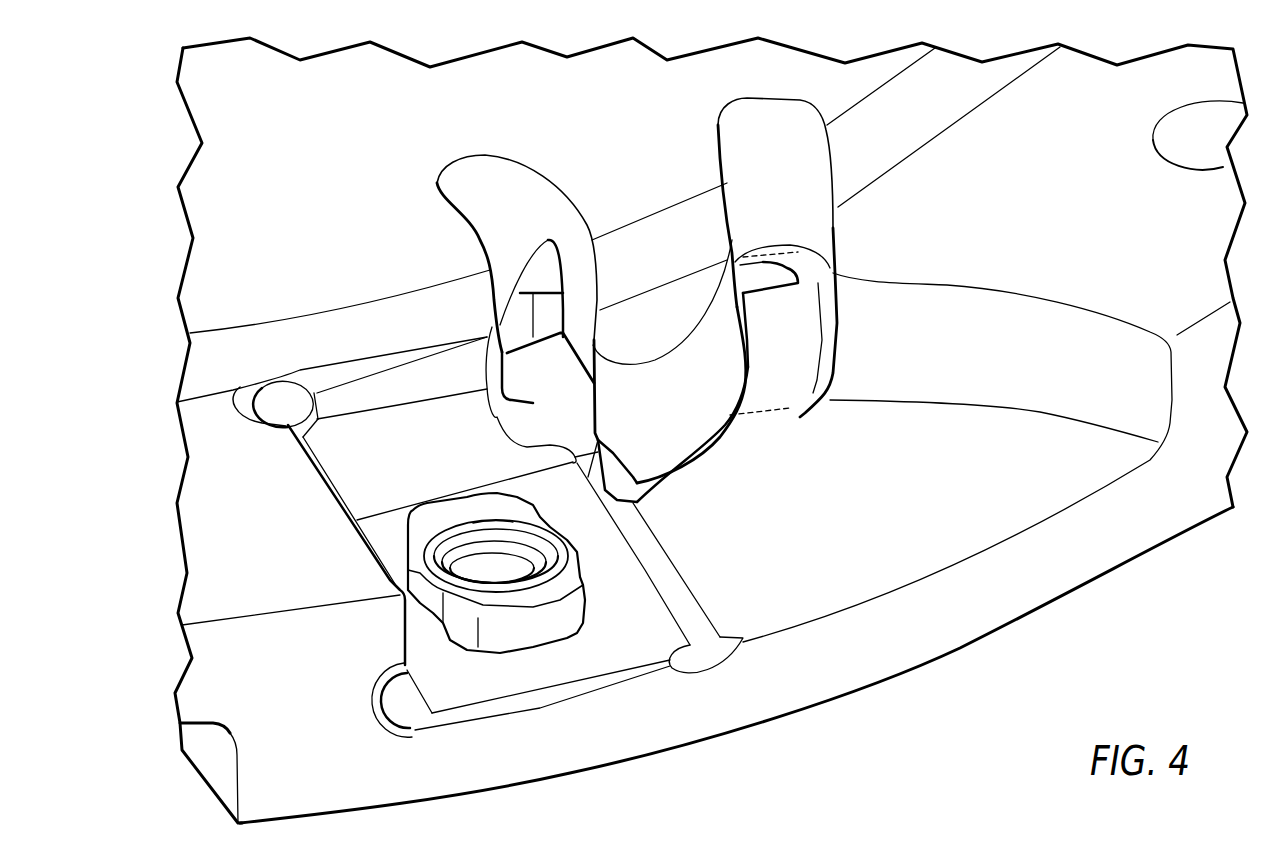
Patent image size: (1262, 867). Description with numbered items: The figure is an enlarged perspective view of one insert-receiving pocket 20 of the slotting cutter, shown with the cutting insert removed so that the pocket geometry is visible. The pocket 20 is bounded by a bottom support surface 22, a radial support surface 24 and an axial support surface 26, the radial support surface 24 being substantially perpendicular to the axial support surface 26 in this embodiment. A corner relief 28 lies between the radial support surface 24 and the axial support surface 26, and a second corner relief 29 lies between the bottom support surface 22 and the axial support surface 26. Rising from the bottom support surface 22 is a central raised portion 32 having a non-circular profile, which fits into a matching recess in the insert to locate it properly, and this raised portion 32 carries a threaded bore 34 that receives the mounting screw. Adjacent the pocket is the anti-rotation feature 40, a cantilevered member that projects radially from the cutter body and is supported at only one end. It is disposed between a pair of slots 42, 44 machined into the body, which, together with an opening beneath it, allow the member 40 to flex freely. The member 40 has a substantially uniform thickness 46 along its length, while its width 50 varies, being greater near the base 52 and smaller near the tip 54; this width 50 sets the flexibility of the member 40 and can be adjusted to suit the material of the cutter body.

The insert-receiving pocket 20 is at (605, 648).
The bottom support surface 22 is at (612, 642).
The radial support surface 24 is at (366, 397).
The axial support surface 26 is at (366, 536).
The corner relief 28 is at (270, 402).
The corner relief 29 is at (398, 716).
The central raised portion 32 is at (515, 627).
The threaded bore 34 is at (540, 552).
The anti-rotation feature 40 is at (652, 280).
The slot 42 is at (483, 187).
The slot 44 is at (775, 135).
The thickness 46 is at (770, 259).
The width 50 is at (727, 212).
The base 52 is at (612, 135).
The tip 54 is at (690, 347).